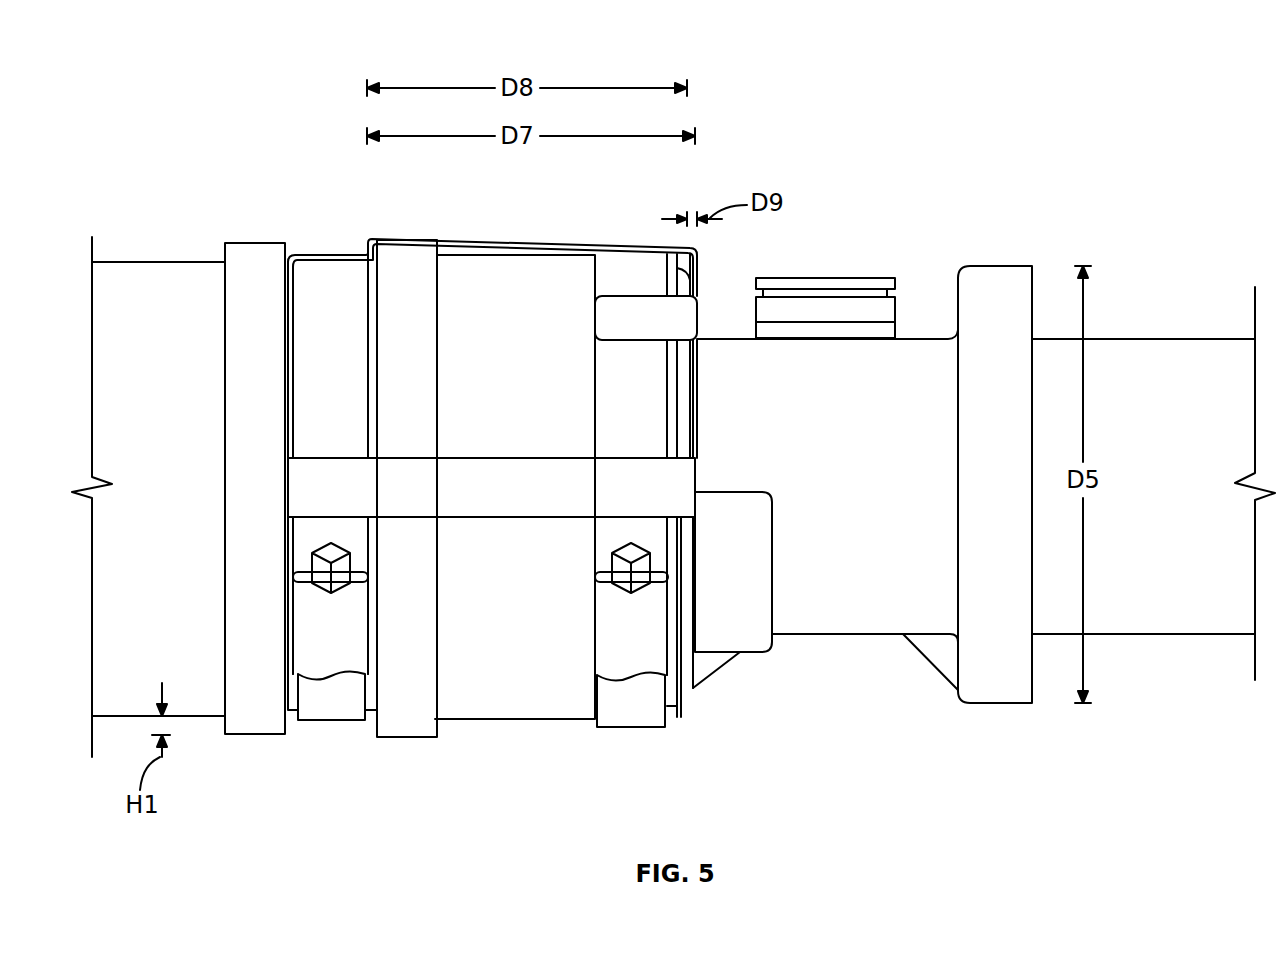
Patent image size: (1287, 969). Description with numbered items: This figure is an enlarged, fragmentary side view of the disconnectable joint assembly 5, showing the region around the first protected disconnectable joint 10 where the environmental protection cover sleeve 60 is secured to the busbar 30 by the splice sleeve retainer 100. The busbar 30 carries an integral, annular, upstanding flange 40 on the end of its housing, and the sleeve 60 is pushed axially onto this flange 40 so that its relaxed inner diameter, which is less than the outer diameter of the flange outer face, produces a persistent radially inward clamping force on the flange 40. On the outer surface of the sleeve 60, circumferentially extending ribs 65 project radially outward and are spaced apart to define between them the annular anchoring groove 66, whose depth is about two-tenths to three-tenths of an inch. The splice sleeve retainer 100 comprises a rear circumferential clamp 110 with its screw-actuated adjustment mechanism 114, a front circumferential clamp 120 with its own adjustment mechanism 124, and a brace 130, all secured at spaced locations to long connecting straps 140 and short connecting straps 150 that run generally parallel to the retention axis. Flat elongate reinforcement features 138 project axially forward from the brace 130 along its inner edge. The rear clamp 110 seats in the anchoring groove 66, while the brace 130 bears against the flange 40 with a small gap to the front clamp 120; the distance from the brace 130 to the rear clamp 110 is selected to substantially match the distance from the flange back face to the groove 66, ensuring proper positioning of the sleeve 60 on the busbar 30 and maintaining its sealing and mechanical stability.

The disconnectable joint assembly 5 is at (1058, 85).
The first protected disconnectable joint 10 is at (728, 180).
The busbar 30 is at (840, 665).
The flange 40 is at (683, 688).
The environmental protection cover sleeve 60 is at (172, 270).
The ribs 65 is at (265, 725).
The anchoring groove 66 is at (300, 742).
The splice sleeve retainer 100 is at (466, 768).
The rear circumferential clamp 110 is at (335, 710).
The adjustment mechanism 114 is at (305, 634).
The front circumferential clamp 120 is at (613, 710).
The adjustment mechanism 124 is at (613, 627).
The brace 130 is at (698, 265).
The reinforcement features 138 is at (742, 500).
The long connecting straps 140 is at (495, 240).
The short connecting straps 150 is at (608, 320).